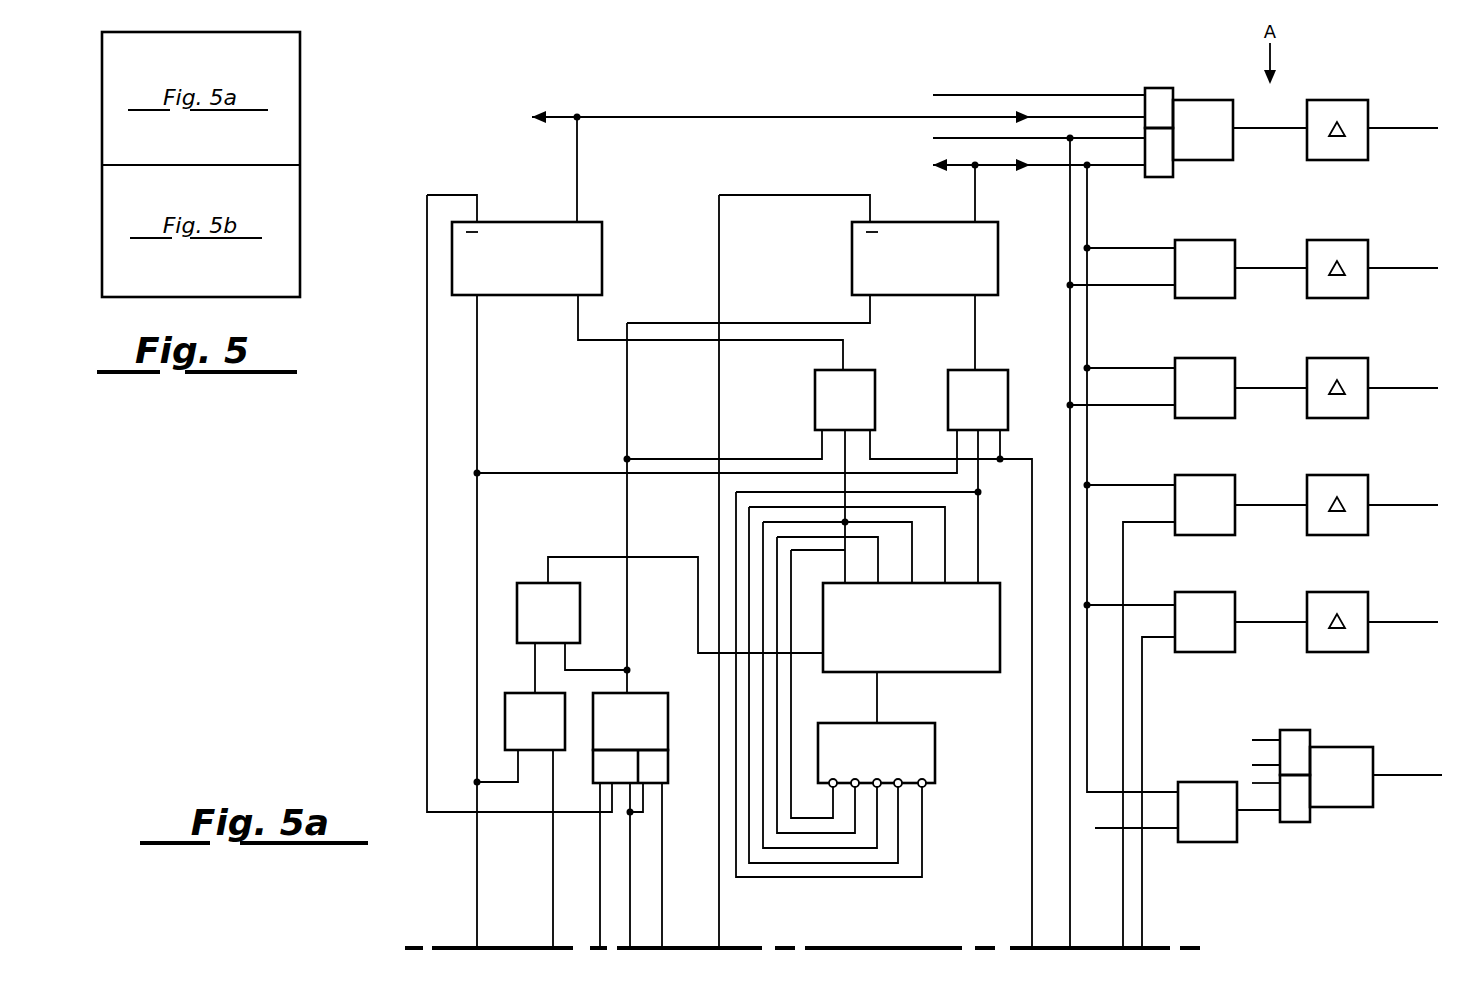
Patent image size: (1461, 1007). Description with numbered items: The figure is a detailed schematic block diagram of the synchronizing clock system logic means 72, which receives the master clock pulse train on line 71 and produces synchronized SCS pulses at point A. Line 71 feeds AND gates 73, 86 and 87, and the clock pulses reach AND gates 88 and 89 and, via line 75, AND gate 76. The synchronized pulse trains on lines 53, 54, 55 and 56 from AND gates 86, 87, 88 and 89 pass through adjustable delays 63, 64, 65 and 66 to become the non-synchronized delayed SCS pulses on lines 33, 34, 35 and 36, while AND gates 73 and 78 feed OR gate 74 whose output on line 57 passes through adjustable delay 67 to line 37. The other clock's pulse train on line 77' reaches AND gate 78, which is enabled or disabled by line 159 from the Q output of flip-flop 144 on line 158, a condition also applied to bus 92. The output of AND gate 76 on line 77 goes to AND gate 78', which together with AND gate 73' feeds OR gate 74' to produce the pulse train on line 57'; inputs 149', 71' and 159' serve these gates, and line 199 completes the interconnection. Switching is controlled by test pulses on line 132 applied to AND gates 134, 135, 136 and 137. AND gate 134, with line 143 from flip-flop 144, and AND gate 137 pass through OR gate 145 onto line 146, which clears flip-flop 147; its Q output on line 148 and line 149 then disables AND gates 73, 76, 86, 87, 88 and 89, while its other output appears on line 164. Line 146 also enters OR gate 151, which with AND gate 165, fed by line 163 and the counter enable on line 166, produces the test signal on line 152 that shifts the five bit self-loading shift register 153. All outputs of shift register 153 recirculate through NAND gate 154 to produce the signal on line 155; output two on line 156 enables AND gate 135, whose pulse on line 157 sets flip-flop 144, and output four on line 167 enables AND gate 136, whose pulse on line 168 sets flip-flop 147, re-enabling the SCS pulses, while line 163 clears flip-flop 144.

The line 159 is at (838, 104).
The bus 92 is at (543, 115).
The line 158 is at (580, 152).
The line 77' is at (1036, 78).
The line 71 is at (1013, 534).
The line 149 is at (1059, 180).
The line 148 is at (977, 192).
The line 199 is at (1089, 227).
The AND gate 78 is at (1142, 91).
The AND gate 73 is at (1142, 168).
The OR gate 74 is at (1226, 116).
The line 57 is at (1270, 114).
The adjustable delay 67 is at (1328, 100).
The line 37 is at (1412, 128).
The AND gate 86 is at (1203, 240).
The line 53 is at (1258, 268).
The adjustable delay 63 is at (1336, 240).
The line 33 is at (1412, 268).
The AND gate 87 is at (1203, 358).
The line 54 is at (1258, 388).
The adjustable delay 64 is at (1336, 358).
The line 34 is at (1412, 388).
The AND gate 88 is at (1203, 475).
The line 55 is at (1258, 505).
The adjustable delay 65 is at (1336, 475).
The line 35 is at (1412, 505).
The AND gate 89 is at (1203, 592).
The line 56 is at (1258, 622).
The adjustable delay 66 is at (1336, 592).
The line 36 is at (1412, 622).
The flip-flop 144 is at (504, 222).
The flip-flop 147 is at (897, 222).
The line 164 is at (753, 195).
The line 143 is at (427, 518).
The line 163 is at (479, 330).
The line 157 is at (592, 315).
The line 146 is at (846, 322).
The line 168 is at (975, 320).
The AND gate 135 is at (863, 370).
The AND gate 136 is at (998, 370).
The line 132 is at (1003, 458).
The line 167 is at (979, 513).
The line 156 is at (913, 546).
The 5 bit self-loading shift register 153 is at (945, 675).
The line 155 is at (877, 700).
The NAND gate 154 is at (937, 738).
The line 152 is at (644, 557).
The OR gate 151 is at (536, 583).
The AND gate 165 is at (521, 693).
The OR gate 145 is at (645, 693).
The AND gate 137 is at (668, 768).
The AND gate 134 is at (599, 780).
The line 166 is at (550, 782).
The AND gate 76 is at (1195, 842).
The line 75 is at (1107, 828).
The line 77 is at (1258, 836).
The AND gate 73' is at (1281, 726).
The AND gate 78' is at (1298, 816).
The OR gate 74' is at (1346, 760).
The line 57' is at (1413, 760).
The line 149' is at (1219, 725).
The line 71' is at (1225, 750).
The line 159' is at (1220, 769).
The synchronizing clock system logic means 72 is at (1330, 897).